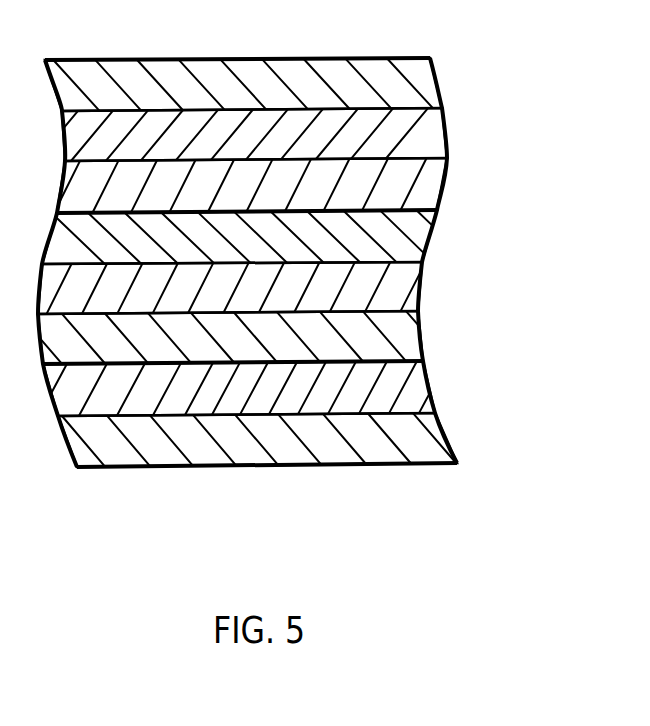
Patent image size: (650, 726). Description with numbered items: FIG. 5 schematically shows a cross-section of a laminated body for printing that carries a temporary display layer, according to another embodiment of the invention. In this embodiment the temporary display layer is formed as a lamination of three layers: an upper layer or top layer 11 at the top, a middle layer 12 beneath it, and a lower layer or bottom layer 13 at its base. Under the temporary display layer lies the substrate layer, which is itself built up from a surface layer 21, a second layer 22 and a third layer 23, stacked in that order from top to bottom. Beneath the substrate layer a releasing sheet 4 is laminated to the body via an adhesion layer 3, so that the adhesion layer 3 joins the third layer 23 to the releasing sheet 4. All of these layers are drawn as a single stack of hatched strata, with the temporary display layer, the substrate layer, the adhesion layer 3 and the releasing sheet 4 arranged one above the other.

The upper layer 11 is at (422, 82).
The middle layer 12 is at (432, 130).
The lower layer 13 is at (432, 186).
The surface layer 21 is at (426, 233).
The second layer 22 is at (420, 282).
The third layer 23 is at (420, 336).
The adhesion layer 3 is at (426, 394).
The releasing sheet 4 is at (438, 452).